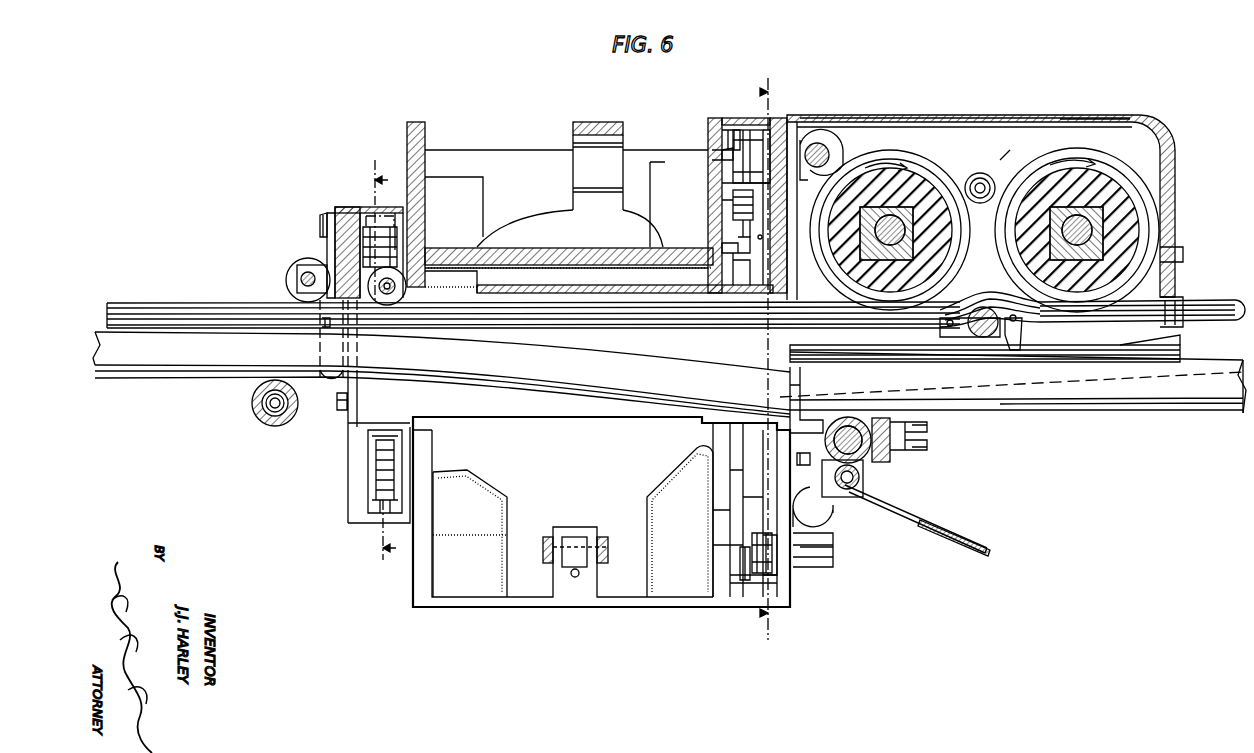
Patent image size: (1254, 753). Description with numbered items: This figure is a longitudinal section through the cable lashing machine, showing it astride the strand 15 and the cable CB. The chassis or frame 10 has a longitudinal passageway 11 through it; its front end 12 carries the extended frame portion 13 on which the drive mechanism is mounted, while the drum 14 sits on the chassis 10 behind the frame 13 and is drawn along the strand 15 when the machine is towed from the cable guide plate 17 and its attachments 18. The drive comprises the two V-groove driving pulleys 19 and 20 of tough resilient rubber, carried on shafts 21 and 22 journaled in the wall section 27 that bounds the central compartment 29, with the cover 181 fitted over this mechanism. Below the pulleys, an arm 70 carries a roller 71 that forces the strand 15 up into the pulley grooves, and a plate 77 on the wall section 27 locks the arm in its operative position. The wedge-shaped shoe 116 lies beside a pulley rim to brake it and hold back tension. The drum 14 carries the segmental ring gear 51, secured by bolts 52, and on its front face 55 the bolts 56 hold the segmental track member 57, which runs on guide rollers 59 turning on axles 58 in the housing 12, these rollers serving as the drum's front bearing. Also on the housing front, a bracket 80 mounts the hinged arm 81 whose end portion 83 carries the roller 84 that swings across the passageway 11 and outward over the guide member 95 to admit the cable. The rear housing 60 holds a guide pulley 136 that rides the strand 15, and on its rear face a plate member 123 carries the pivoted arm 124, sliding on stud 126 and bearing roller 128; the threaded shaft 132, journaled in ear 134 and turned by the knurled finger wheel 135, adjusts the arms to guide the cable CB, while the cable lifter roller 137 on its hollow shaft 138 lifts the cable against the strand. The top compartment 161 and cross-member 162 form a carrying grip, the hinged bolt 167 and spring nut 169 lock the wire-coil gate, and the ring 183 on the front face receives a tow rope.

The chassis or frame 10 is at (787, 120).
The longitudinal passageway 11 is at (367, 403).
The front end of the chassis (housing) 12 is at (833, 540).
The extended frame portion 13 is at (1192, 143).
The drum 14 is at (470, 610).
The strand 15 is at (166, 303).
The cable guide plate 17 is at (915, 521).
The attachments 18 is at (391, 362).
The V-groove driving pulley 19 is at (924, 173).
The V-groove driving pulley 20 is at (1076, 152).
The shaft 21 is at (893, 237).
The shaft 22 is at (1036, 226).
The wall section 27 is at (931, 118).
The central compartment 29 is at (1000, 157).
The segmental ring gear 51 is at (733, 216).
The bolts 52 is at (722, 248).
The front face of the drum 55 is at (708, 190).
The bolts 56 is at (712, 152).
The segmental flange or track member 57 is at (741, 125).
The axles 58 is at (727, 129).
The guide rollers 59 is at (800, 125).
The rear end housing 60 is at (355, 482).
The extending arm 70 is at (1022, 335).
The roller member 71 is at (955, 334).
The plate 77 is at (972, 310).
The bracket 80 is at (797, 459).
The hinge member or arm 81 is at (928, 440).
The end portion of the arm 83 is at (882, 450).
The roller 84 is at (855, 455).
The guide member 95 is at (815, 415).
The wedge-shaped dog or shoe 116 is at (843, 152).
The plate member 123 is at (344, 206).
The pivoted downwardly projecting arm 124 is at (330, 240).
The stud 126 is at (323, 219).
The roller member 128 is at (322, 327).
The shaft 132 is at (300, 281).
The lug or ear 134 is at (303, 269).
The knurled finger wheel 135 is at (287, 276).
The guide pulley 136 is at (375, 300).
The cable lifter roller 137 is at (254, 417).
The hollow outboard shaft 138 is at (275, 410).
The top compartment 161 is at (517, 180).
The cross-member 162 is at (615, 120).
The hinged bolt 167 is at (582, 568).
The threaded spring nut 169 is at (573, 577).
The cover 181 is at (1078, 117).
The ring 183 is at (831, 513).
The cable CB is at (145, 377).